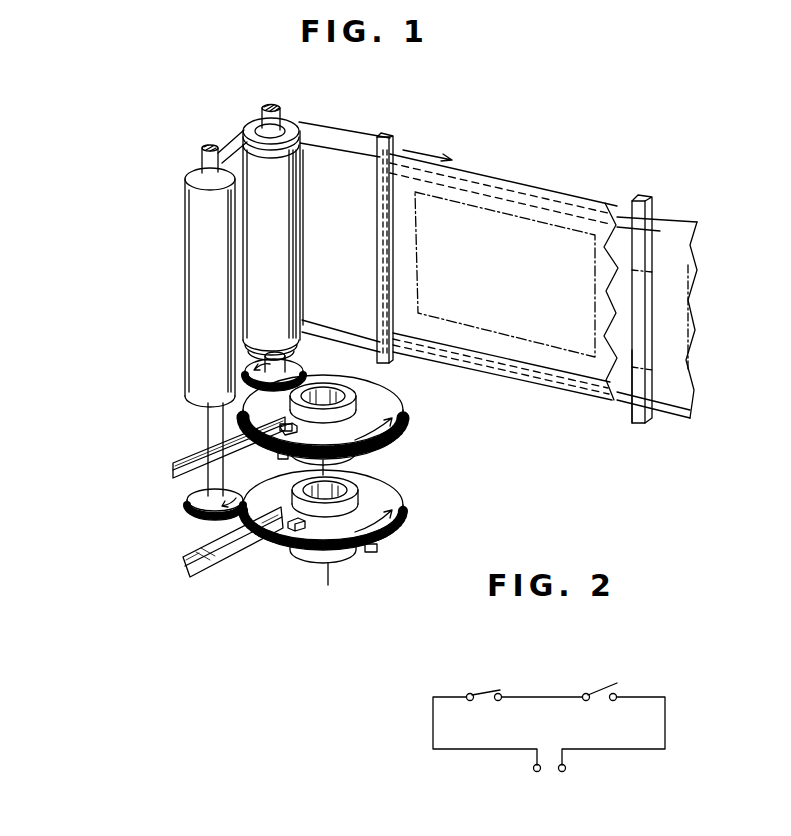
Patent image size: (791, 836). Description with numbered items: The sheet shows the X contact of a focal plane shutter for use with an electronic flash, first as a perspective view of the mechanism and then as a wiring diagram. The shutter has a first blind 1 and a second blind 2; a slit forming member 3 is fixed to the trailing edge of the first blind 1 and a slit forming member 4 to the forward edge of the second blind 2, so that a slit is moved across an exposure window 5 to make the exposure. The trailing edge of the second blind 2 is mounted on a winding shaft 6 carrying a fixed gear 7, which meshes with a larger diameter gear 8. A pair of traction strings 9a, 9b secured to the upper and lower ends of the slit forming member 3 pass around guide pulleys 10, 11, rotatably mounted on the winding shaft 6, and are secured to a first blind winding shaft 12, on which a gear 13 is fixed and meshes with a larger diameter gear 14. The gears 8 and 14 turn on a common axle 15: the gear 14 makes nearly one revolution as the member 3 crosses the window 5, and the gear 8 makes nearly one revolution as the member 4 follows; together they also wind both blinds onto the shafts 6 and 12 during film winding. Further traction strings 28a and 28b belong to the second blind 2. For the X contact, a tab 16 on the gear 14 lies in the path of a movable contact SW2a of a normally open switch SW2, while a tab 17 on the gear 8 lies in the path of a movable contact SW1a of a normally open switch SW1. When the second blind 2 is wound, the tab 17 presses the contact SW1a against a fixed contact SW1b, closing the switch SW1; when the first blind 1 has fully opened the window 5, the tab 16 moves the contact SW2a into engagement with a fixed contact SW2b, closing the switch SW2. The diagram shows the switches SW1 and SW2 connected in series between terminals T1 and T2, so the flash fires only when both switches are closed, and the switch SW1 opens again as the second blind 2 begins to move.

In FIG. 1, the first blind 1 is at (500, 205).
In FIG. 1, the second blind 2 is at (343, 165).
In FIG. 1, the slit forming member 3 is at (392, 140).
In FIG. 1, the slit forming member 4 is at (366, 160).
In FIG. 1, the exposure window 5 is at (548, 235).
In FIG. 1, the winding shaft 6 is at (267, 126).
In FIG. 1, the gear 7 is at (323, 403).
In FIG. 1, the gear 8 is at (405, 430).
In FIG. 1, the traction string 9a is at (325, 132).
In FIG. 1, the traction string 9b is at (368, 378).
In FIG. 1, the guide pulley 10 is at (252, 124).
In FIG. 1, the guide pulley 11 is at (317, 350).
In FIG. 1, the first blind winding shaft 12 is at (207, 162).
In FIG. 1, the gear 13 is at (187, 512).
In FIG. 1, the gear 14 is at (392, 500).
In FIG. 1, the axle 15 is at (395, 395).
In FIG. 1, the tab 16 is at (284, 543).
In FIG. 1, the tab 17 is at (358, 462).
In FIG. 1, the traction string 28a is at (628, 215).
In FIG. 1, the traction string 28b is at (625, 397).
In FIG. 1, the first switch SW1 is at (187, 473).
In FIG. 2, the first switch SW1 is at (483, 693).
In FIG. 1, the movable contact SW1a is at (187, 481).
In FIG. 2, the movable contact SW1a is at (466, 694).
In FIG. 1, the fixed contact SW1b is at (187, 453).
In FIG. 2, the fixed contact SW1b is at (495, 701).
In FIG. 1, the second switch SW2 is at (183, 577).
In FIG. 2, the second switch SW2 is at (600, 688).
In FIG. 1, the movable contact SW2a is at (187, 553).
In FIG. 2, the movable contact SW2a is at (591, 701).
In FIG. 1, the fixed contact SW2b is at (227, 557).
In FIG. 2, the fixed contact SW2b is at (618, 687).
In FIG. 2, the terminal T1 is at (533, 771).
In FIG. 2, the terminal T2 is at (565, 772).